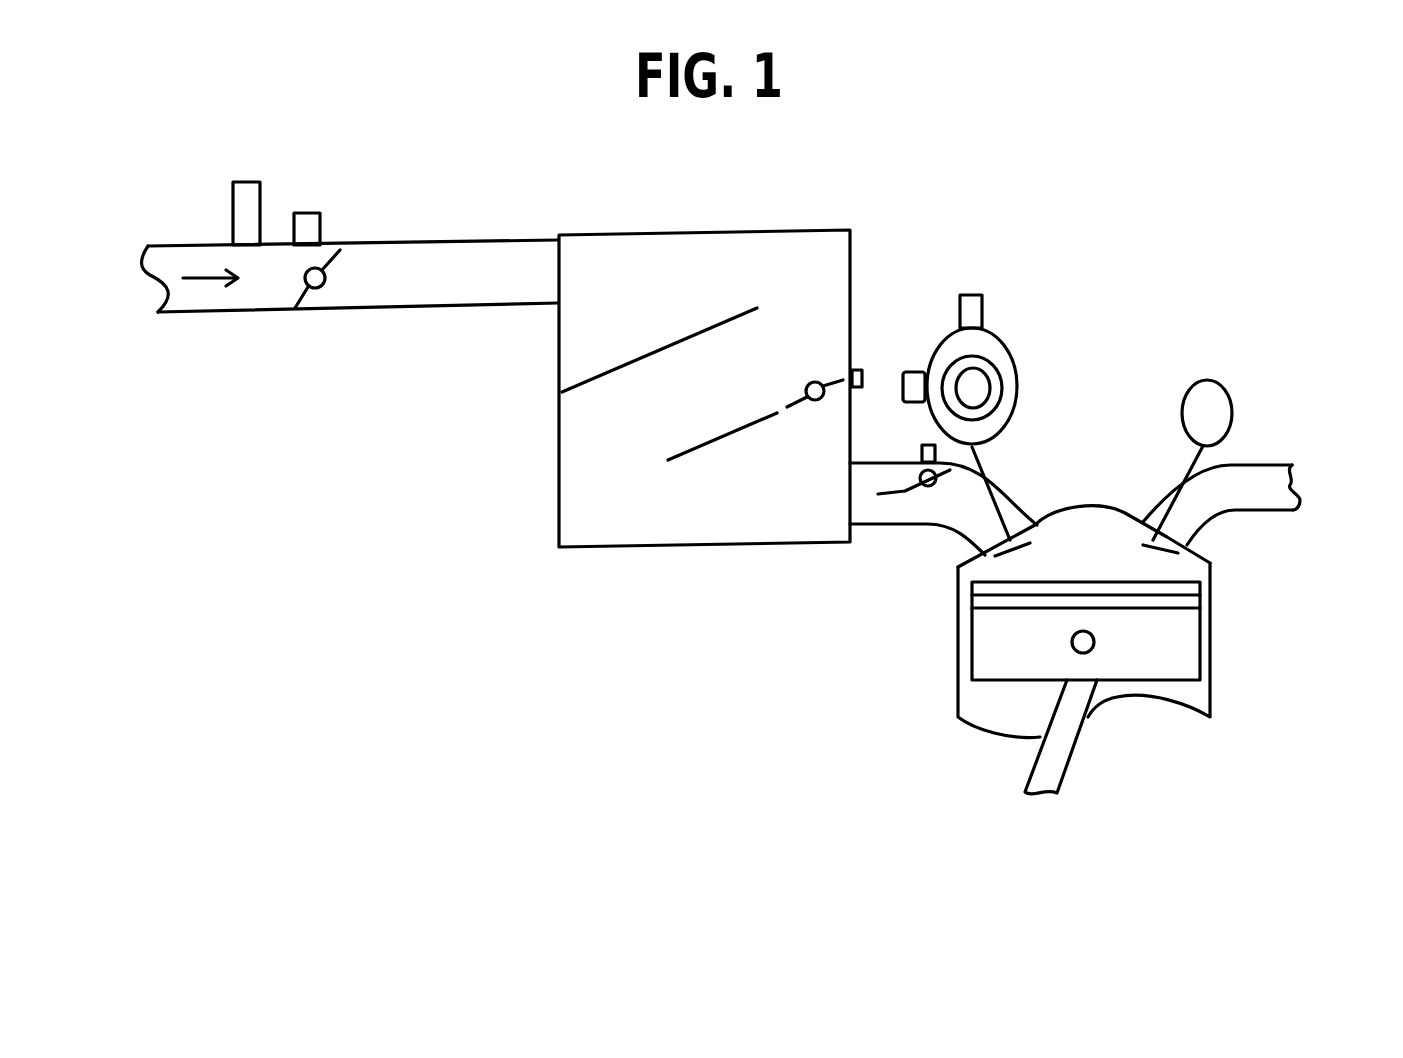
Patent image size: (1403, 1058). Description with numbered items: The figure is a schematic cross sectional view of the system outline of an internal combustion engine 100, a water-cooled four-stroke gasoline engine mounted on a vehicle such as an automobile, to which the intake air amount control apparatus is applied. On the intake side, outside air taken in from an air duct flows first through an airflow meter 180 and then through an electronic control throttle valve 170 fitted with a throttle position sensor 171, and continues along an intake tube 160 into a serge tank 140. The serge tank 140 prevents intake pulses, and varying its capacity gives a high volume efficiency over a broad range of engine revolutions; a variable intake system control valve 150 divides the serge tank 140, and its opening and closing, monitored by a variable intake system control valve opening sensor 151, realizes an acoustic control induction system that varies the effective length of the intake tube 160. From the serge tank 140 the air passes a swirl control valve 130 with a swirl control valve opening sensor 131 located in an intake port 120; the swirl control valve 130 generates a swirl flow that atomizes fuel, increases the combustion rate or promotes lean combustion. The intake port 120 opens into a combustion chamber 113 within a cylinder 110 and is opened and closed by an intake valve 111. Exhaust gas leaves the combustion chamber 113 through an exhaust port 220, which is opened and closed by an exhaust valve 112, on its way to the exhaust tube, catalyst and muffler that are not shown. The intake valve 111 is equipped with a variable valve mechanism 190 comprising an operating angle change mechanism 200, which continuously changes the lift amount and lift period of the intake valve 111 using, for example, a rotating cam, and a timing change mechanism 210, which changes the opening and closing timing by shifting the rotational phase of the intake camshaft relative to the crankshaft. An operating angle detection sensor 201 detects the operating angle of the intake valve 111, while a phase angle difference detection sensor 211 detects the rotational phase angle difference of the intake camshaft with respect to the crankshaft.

The internal combustion engine 100 is at (711, 830).
The cylinder 110 is at (1208, 692).
The intake valve 111 is at (1049, 490).
The exhaust valve 112 is at (1120, 485).
The combustion chamber 113 is at (1060, 518).
The intake port 120 is at (868, 487).
The swirl control valve 130 is at (925, 487).
The swirl control valve opening sensor 131 is at (924, 444).
The serge tank 140 is at (827, 262).
The variable intake system control valve 150 is at (815, 400).
The variable intake system control valve opening sensor 151 is at (855, 380).
The intake tube 160 is at (477, 275).
The electronic control throttle valve 170 is at (317, 290).
The throttle position sensor 171 is at (303, 228).
The airflow meter 180 is at (240, 202).
The variable valve mechanism 190 is at (1150, 366).
The operating angle change mechanism 200 is at (1033, 354).
The operating angle detection sensor 201 is at (912, 370).
The timing change mechanism 210 is at (973, 390).
The phase angle difference detection sensor 211 is at (967, 310).
The exhaust port 220 is at (1277, 480).